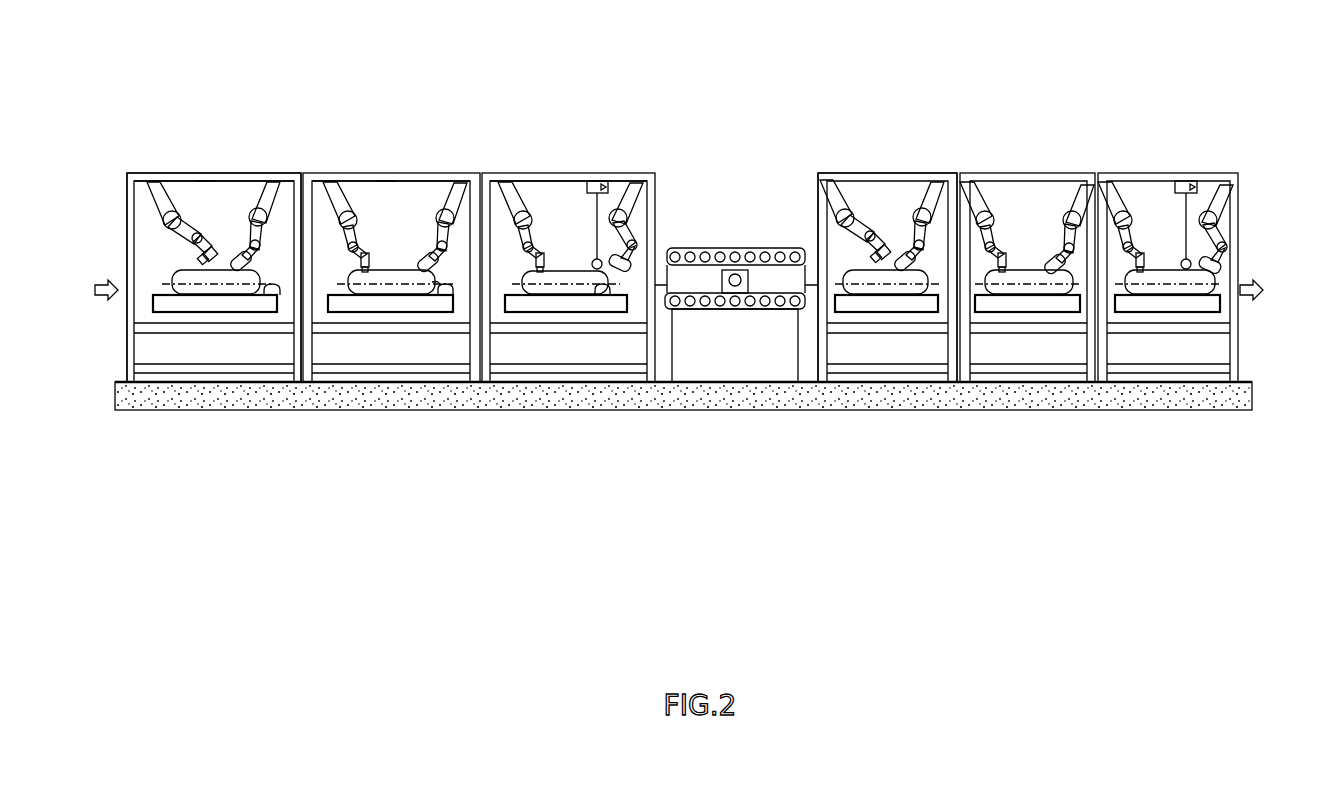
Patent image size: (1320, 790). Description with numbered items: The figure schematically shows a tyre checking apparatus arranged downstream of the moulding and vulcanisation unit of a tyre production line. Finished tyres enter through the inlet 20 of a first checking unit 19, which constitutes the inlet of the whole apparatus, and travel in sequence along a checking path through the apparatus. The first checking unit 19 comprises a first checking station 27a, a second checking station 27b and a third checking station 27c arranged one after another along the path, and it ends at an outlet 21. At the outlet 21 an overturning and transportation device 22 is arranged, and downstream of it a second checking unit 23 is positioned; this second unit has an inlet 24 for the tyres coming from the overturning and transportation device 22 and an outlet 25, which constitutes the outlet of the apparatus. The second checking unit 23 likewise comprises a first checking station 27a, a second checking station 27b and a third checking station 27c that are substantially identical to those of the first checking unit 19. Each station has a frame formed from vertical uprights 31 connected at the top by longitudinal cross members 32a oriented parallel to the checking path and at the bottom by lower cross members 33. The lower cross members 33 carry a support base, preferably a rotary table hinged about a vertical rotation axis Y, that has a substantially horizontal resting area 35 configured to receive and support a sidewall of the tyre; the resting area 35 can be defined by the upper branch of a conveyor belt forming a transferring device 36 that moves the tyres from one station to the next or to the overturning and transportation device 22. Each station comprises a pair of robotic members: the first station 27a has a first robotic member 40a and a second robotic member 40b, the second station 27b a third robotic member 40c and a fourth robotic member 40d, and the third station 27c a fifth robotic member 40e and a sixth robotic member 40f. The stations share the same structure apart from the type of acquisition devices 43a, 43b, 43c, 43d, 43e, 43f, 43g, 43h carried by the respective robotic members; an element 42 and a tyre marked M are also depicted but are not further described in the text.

The first checking unit 19 is at (378, 537).
The inlet 20 is at (122, 178).
The outlet 21 is at (666, 338).
The overturning and transportation device 22 is at (733, 330).
The second checking unit 23 is at (1050, 517).
The inlet 24 is at (813, 208).
The outlet 25 is at (1255, 245).
The first checking station 27a is at (230, 100).
The second checking station 27b is at (367, 100).
The third checking station 27c is at (548, 105).
The vertical uprights 31 is at (133, 235).
The longitudinal cross members 32a is at (157, 173).
The lower cross members 33 is at (199, 372).
The resting area 35 is at (279, 294).
The transferring device 36 is at (155, 320).
The first robotic member 40a is at (185, 185).
The second robotic member 40b is at (241, 182).
The third robotic member 40c is at (357, 180).
The fourth robotic member 40d is at (423, 181).
The fifth robotic member 40e is at (530, 175).
The sixth robotic member 40f is at (595, 172).
The vertical probe 42 is at (571, 180).
The acquisition device 43a is at (198, 262).
The acquisition device 43b is at (204, 180).
The acquisition device 43c is at (226, 300).
The acquisition device 43d is at (370, 276).
The acquisition device 43e is at (385, 180).
The acquisition device 43f is at (432, 282).
The acquisition device 43g is at (560, 296).
The acquisition device 43h is at (628, 262).
The mold M is at (903, 292).
The vertical rotation axis Y is at (216, 356).